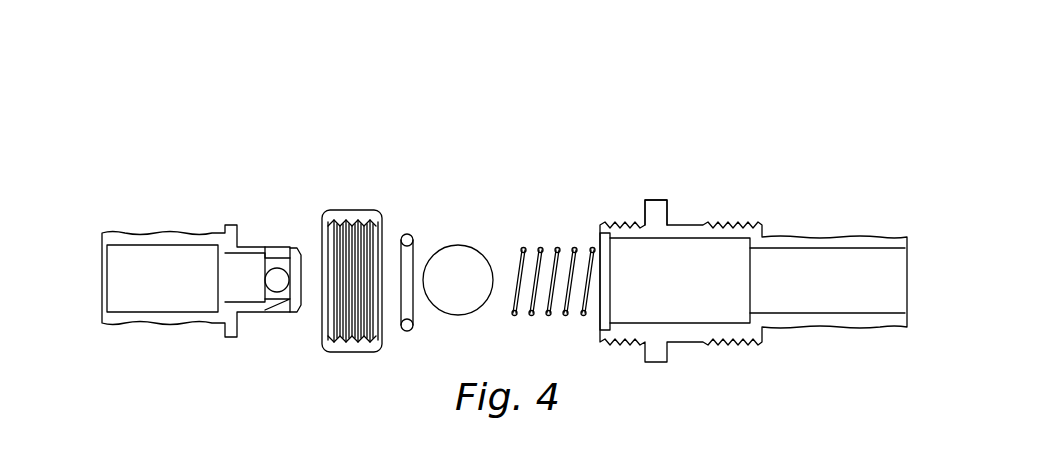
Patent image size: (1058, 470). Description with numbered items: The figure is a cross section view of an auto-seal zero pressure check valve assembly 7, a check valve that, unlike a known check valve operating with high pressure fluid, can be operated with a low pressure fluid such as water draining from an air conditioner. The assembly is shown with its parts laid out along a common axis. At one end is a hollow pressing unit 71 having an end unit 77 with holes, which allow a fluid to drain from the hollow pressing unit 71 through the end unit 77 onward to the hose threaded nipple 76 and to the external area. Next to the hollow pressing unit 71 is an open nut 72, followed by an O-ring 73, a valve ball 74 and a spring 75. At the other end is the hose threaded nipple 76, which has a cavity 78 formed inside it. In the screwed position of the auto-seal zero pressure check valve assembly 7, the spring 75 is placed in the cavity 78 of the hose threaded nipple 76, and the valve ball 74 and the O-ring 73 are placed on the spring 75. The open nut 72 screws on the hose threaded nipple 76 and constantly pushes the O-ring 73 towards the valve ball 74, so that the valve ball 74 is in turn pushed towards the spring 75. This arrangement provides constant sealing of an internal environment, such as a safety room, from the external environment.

The auto-seal zero pressure check valve assembly 7 is at (395, 92).
The hollow pressing unit 71 is at (202, 275).
The open nut 72 is at (347, 210).
The O-ring 73 is at (403, 233).
The valve ball 74 is at (475, 240).
The spring 75 is at (557, 238).
The hose threaded nipple 76 is at (657, 198).
The end unit 77 is at (277, 280).
The cavity 78 is at (753, 255).